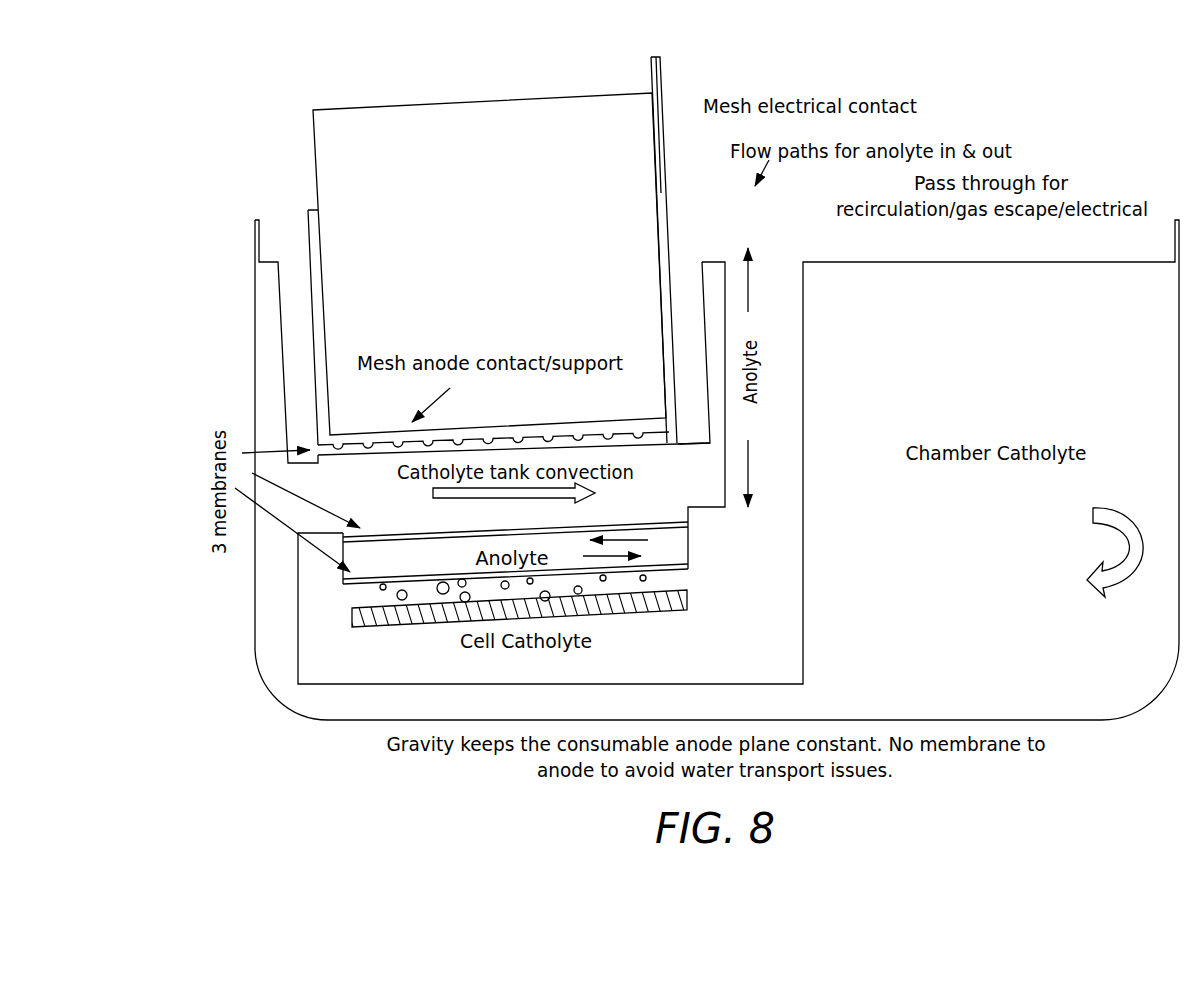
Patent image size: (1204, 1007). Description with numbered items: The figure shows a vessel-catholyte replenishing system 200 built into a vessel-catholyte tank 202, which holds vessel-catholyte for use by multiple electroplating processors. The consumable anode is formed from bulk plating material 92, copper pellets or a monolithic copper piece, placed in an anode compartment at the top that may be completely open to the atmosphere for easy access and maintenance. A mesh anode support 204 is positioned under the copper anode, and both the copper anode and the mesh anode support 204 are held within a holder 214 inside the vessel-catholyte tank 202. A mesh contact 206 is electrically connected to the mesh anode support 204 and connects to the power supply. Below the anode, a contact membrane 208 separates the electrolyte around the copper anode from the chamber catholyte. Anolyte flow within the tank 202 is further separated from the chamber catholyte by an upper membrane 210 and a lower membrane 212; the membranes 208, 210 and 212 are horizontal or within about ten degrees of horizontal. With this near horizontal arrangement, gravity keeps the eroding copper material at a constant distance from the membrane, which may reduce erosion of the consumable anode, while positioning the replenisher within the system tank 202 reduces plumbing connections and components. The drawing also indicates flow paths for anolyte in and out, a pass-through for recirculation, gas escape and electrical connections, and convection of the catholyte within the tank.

The system 200 is at (277, 114).
The bulk plating material 92 is at (418, 128).
The vessel-catholyte tank 202 is at (254, 237).
The mesh anode support 204 is at (665, 83).
The mesh contact 206 is at (372, 448).
The contact membrane 208 is at (370, 453).
The upper membrane 210 is at (432, 533).
The lower membrane 212 is at (353, 588).
The holder 214 is at (307, 230).